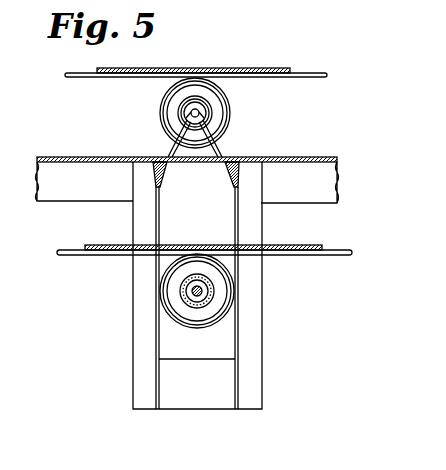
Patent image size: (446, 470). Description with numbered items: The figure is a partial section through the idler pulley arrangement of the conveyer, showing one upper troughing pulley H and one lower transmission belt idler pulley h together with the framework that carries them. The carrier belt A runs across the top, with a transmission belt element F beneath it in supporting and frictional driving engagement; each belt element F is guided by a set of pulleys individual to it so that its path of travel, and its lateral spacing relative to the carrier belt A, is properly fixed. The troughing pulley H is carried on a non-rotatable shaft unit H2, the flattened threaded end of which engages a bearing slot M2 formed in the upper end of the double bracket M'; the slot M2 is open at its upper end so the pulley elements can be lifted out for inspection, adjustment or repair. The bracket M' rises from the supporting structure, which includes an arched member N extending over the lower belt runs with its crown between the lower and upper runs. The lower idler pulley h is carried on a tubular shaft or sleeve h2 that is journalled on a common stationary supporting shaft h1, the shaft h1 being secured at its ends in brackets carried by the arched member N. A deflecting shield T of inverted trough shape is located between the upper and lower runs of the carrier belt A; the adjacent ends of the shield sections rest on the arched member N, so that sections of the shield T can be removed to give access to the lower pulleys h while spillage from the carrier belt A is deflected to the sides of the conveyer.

The carrier belt A is at (258, 68).
The transmission belt element F is at (315, 74).
The troughing pulley H is at (175, 93).
The bearing slot M2 is at (205, 104).
The shaft unit H2 is at (186, 123).
The double bracket M' is at (221, 138).
The deflecting shield T is at (302, 158).
The arched member N is at (252, 228).
The transmission belt idler pulley h is at (218, 279).
The tubular shaft or sleeve h2 is at (182, 278).
The stationary supporting shaft h1 is at (180, 300).